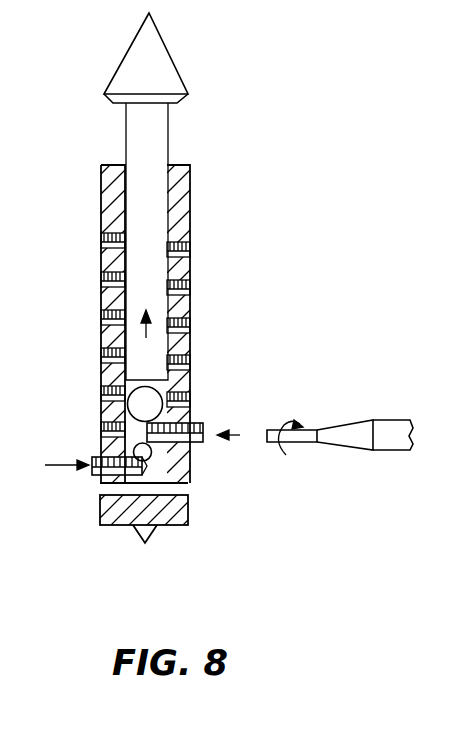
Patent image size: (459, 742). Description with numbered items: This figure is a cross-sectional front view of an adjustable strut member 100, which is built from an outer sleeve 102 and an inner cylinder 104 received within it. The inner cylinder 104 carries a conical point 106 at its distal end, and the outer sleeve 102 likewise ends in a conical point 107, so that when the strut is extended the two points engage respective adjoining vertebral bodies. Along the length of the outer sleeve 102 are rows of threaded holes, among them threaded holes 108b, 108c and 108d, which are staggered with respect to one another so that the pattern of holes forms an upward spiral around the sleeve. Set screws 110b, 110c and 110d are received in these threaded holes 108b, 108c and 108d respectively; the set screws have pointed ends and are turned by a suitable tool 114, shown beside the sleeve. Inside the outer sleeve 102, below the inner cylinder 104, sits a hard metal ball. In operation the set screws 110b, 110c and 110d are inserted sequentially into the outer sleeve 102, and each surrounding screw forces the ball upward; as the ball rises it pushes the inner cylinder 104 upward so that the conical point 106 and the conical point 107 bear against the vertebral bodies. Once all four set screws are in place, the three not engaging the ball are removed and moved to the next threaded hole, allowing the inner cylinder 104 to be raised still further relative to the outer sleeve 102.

The adjustable strut member 100 is at (270, 242).
The outer sleeve 102 is at (183, 210).
The inner cylinder 104 is at (158, 135).
The conical point 106 is at (160, 62).
The conical point 107 is at (138, 537).
The threaded holes 108b is at (101, 233).
The threaded holes 108c is at (190, 245).
The threaded holes 108d is at (151, 453).
The set screw 110b is at (92, 473).
The set screw 110c is at (205, 423).
The set screw 110d is at (147, 460).
The tool 114 is at (353, 418).